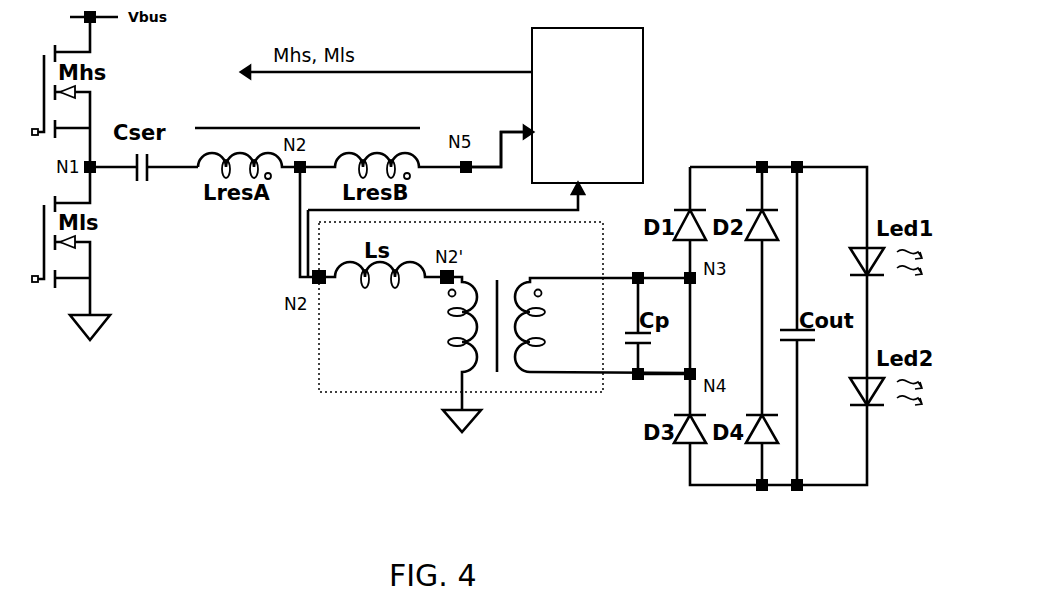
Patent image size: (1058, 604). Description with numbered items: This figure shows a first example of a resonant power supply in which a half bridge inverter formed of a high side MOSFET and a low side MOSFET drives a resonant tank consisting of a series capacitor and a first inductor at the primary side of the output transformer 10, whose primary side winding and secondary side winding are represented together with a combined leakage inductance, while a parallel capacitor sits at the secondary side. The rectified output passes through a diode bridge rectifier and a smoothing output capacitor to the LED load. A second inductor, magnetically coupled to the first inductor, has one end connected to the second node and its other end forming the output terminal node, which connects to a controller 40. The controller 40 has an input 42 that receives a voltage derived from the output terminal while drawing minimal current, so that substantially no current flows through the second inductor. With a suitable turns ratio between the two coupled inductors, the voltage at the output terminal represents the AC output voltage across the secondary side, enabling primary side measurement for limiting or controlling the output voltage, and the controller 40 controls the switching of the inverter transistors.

The output transformer 10 is at (320, 330).
The controller 40 is at (643, 100).
The controller input 42 is at (533, 132).